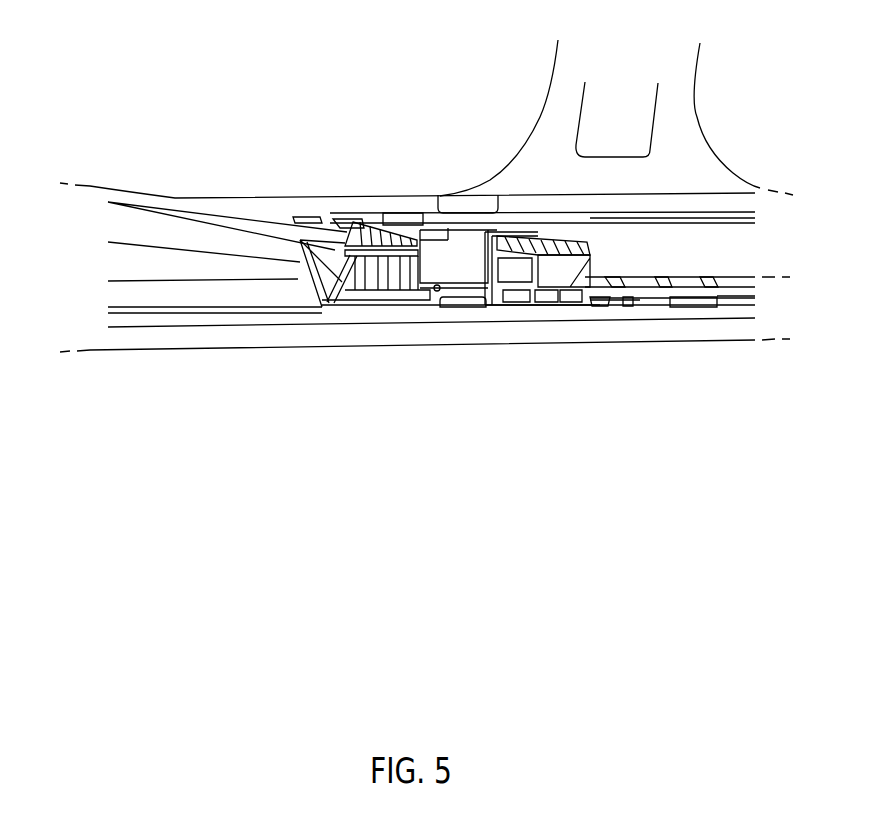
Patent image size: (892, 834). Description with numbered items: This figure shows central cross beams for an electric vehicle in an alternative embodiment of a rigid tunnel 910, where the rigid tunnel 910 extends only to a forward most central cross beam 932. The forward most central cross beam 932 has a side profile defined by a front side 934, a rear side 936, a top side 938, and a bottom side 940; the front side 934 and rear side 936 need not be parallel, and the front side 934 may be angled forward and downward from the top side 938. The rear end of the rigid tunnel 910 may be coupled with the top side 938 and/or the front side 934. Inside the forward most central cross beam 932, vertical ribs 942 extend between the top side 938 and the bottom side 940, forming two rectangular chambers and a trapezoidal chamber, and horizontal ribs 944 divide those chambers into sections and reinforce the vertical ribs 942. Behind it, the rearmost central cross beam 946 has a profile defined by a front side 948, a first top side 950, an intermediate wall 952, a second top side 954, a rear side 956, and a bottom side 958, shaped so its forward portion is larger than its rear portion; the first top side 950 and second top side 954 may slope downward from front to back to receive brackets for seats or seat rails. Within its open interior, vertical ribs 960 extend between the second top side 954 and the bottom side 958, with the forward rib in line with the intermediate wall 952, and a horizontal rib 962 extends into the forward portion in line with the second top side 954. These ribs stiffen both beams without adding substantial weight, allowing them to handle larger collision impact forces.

The rigid tunnel 910 is at (197, 230).
The forward most central cross beam 932 is at (420, 307).
The front side 934 is at (322, 293).
The rear side 936 is at (424, 262).
The top side 938 is at (402, 228).
The bottom side 940 is at (346, 305).
The ribs 942 is at (397, 307).
The horizontal ribs 944 is at (377, 307).
The rearmost central cross beam 946 is at (585, 305).
The front side 948 is at (493, 307).
The first top side 950 is at (497, 232).
The intermediate wall 952 is at (549, 215).
The second top side 954 is at (590, 273).
The rear side 956 is at (597, 307).
The bottom side 958 is at (528, 307).
The ribs 960 is at (562, 305).
The horizontal rib 962 is at (501, 216).